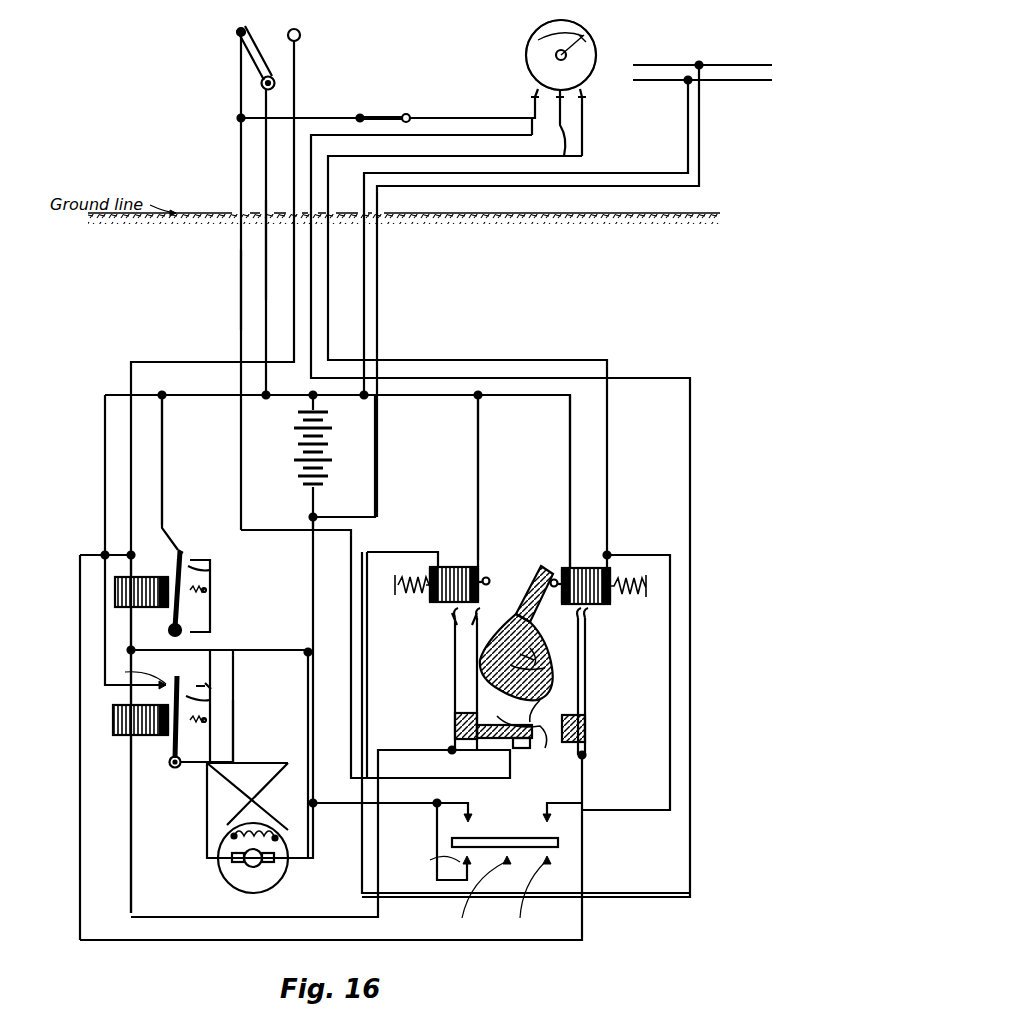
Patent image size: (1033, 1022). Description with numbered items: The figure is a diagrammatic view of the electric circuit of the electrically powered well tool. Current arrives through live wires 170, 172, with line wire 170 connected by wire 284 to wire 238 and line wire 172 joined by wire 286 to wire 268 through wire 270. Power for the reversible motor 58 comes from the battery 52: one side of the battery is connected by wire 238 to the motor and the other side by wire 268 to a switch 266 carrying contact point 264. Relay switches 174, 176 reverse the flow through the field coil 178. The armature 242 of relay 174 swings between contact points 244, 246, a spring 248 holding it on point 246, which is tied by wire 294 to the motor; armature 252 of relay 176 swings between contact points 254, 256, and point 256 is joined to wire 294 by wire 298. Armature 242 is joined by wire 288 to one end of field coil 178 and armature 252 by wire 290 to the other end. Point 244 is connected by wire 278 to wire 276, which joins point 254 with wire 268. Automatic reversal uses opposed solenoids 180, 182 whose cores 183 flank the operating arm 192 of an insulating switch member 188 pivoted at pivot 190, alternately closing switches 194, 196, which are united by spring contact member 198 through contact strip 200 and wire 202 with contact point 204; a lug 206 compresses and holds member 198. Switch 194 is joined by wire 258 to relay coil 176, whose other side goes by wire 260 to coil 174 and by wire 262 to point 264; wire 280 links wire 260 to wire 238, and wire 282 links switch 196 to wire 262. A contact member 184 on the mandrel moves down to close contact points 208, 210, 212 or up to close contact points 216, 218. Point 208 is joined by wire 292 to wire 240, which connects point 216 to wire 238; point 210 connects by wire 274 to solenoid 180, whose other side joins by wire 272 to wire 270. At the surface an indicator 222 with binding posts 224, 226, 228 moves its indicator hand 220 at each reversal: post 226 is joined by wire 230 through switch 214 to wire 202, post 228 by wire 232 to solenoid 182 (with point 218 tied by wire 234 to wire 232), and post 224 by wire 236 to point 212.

The battery 52 is at (296, 458).
The reversible motor 58 is at (235, 872).
The live wire 170 is at (735, 64).
The live wire 172 is at (716, 82).
The relay switch 174 is at (134, 608).
The relay switch 176 is at (133, 736).
The field coil 178 is at (226, 840).
The solenoid 180 is at (452, 604).
The solenoid 182 is at (592, 606).
The solenoid core 183 is at (488, 577).
The contact member 184 is at (498, 836).
The switch member 188 is at (546, 662).
The pivot 190 is at (548, 677).
The operating arm 192 is at (528, 598).
The switch 194 is at (455, 697).
The switch 196 is at (586, 694).
The spring contact member 198 is at (546, 740).
The contact strip 200 is at (488, 652).
The wire 202 is at (239, 310).
The contact point 204 is at (238, 36).
The lug 206 is at (484, 750).
The contact point 208 is at (427, 852).
The contact point 210 is at (483, 892).
The contact point 212 is at (533, 892).
The switch 214 is at (383, 116).
The contact point 216 is at (471, 817).
The contact point 218 is at (562, 818).
The indicator hand 220 is at (566, 28).
The indicator 222 is at (525, 57).
The binding post 224 is at (533, 99).
The binding post 226 is at (563, 122).
The binding post 228 is at (588, 95).
The wire 230 is at (465, 116).
The wire 232 is at (586, 156).
The wire 234 is at (620, 812).
The wire 236 is at (313, 180).
The wire 238 is at (311, 501).
The wire 240 is at (316, 806).
The armature 242 is at (210, 570).
The contact point 244 is at (172, 548).
The contact point 246 is at (188, 552).
The spring 248 is at (206, 593).
The armature 252 is at (212, 692).
The contact point 254 is at (144, 669).
The contact point 256 is at (192, 688).
The wire 258 is at (404, 746).
The wire 260 is at (118, 668).
The wire 262 is at (296, 70).
The contact point 264 is at (300, 33).
The switch 266 is at (262, 70).
The wire 268 is at (262, 182).
The wire 270 is at (332, 397).
The wire 272 is at (478, 502).
The wire 274 is at (394, 552).
The wire 276 is at (226, 396).
The wire 278 is at (162, 444).
The wire 280 is at (288, 652).
The wire 282 is at (78, 810).
The wire 284 is at (702, 178).
The wire 286 is at (686, 141).
The wire 288 is at (235, 746).
The wire 290 is at (258, 780).
The wire 292 is at (436, 827).
The wire 294 is at (212, 556).
The wire 298 is at (210, 678).